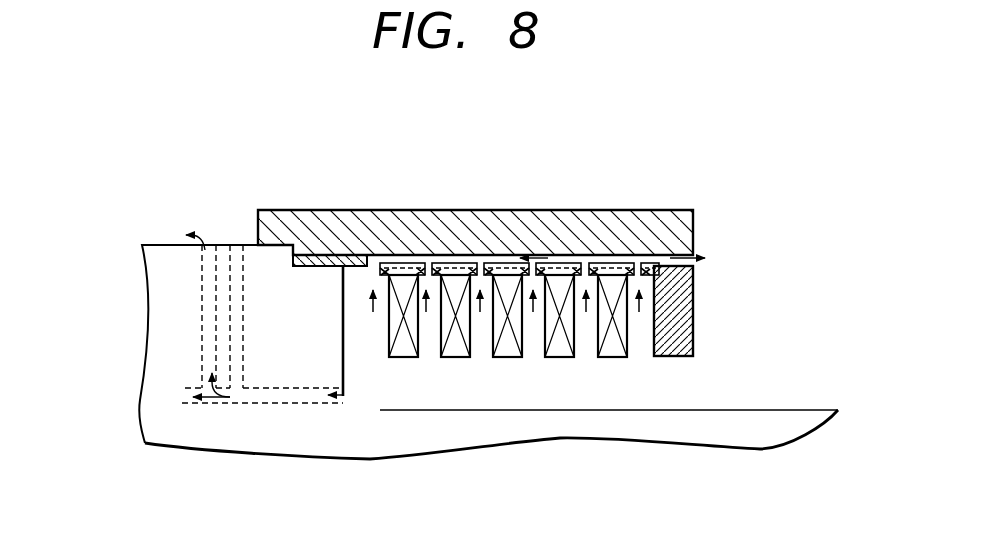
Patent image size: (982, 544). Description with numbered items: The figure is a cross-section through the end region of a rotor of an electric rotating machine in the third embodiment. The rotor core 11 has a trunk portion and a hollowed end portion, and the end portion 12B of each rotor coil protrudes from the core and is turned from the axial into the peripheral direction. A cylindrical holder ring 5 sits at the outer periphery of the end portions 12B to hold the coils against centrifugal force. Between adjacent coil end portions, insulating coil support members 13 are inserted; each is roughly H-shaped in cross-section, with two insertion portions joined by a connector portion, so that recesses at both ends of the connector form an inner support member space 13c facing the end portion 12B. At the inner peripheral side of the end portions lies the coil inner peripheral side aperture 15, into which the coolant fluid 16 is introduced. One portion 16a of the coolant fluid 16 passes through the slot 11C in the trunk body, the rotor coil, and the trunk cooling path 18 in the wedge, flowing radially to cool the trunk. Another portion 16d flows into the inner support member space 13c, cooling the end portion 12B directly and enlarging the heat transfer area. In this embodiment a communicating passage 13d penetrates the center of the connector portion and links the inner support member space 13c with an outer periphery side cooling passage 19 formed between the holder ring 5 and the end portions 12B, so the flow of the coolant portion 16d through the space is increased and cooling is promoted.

The holder ring 5 is at (315, 222).
The rotor core 11 is at (775, 435).
The slot 11C is at (380, 410).
The end portion of rotor coil 12B is at (455, 281).
The coil support member 13 is at (508, 267).
The inner support member space 13c is at (588, 322).
The communicating passage 13d is at (480, 263).
The coil inner peripheral side aperture 15 is at (577, 363).
The coolant fluid 16 is at (718, 368).
The portion of coolant fluid 16a is at (525, 392).
The portion of coolant fluid 16d is at (483, 369).
The trunk cooling path 18 is at (203, 340).
The outer periphery side cooling passage 19 is at (568, 257).